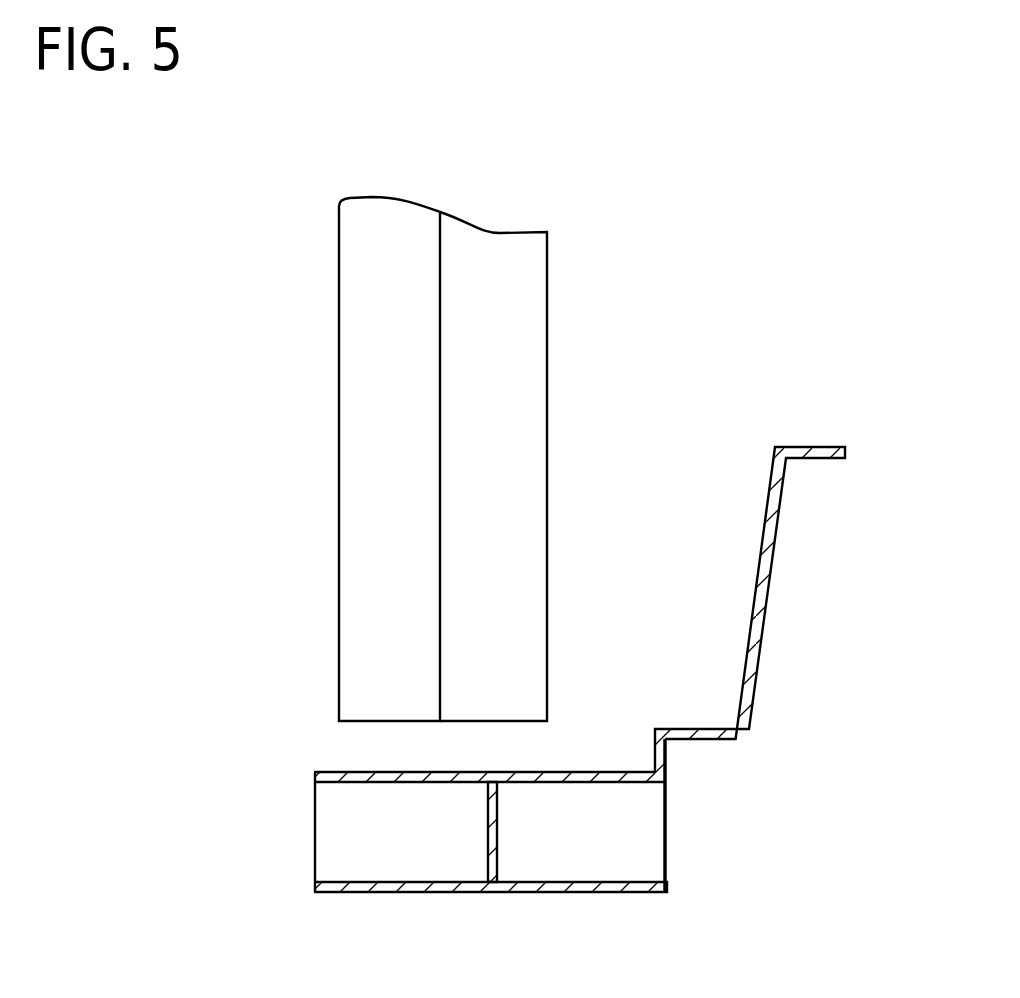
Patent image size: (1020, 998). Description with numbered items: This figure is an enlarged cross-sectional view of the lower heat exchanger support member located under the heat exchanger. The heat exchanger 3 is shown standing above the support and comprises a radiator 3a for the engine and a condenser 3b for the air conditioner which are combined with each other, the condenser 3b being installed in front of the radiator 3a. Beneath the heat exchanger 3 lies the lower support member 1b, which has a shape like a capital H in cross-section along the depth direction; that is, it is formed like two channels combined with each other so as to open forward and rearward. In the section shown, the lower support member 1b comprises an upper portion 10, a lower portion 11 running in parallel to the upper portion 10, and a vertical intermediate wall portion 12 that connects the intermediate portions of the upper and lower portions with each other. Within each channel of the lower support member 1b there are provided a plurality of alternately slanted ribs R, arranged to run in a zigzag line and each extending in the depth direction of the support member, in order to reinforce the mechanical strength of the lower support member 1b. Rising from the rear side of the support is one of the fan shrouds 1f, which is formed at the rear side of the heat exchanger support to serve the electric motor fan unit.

The heat exchanger 3 is at (512, 459).
The radiator 3a is at (492, 472).
The condenser 3b is at (407, 583).
The fan shroud 1f is at (771, 500).
The upper portion 10 is at (492, 833).
The lower portion 11 is at (345, 898).
The vertical intermediate wall portion 12 is at (497, 840).
The lower support member 1b is at (647, 900).
The rib R is at (342, 836).